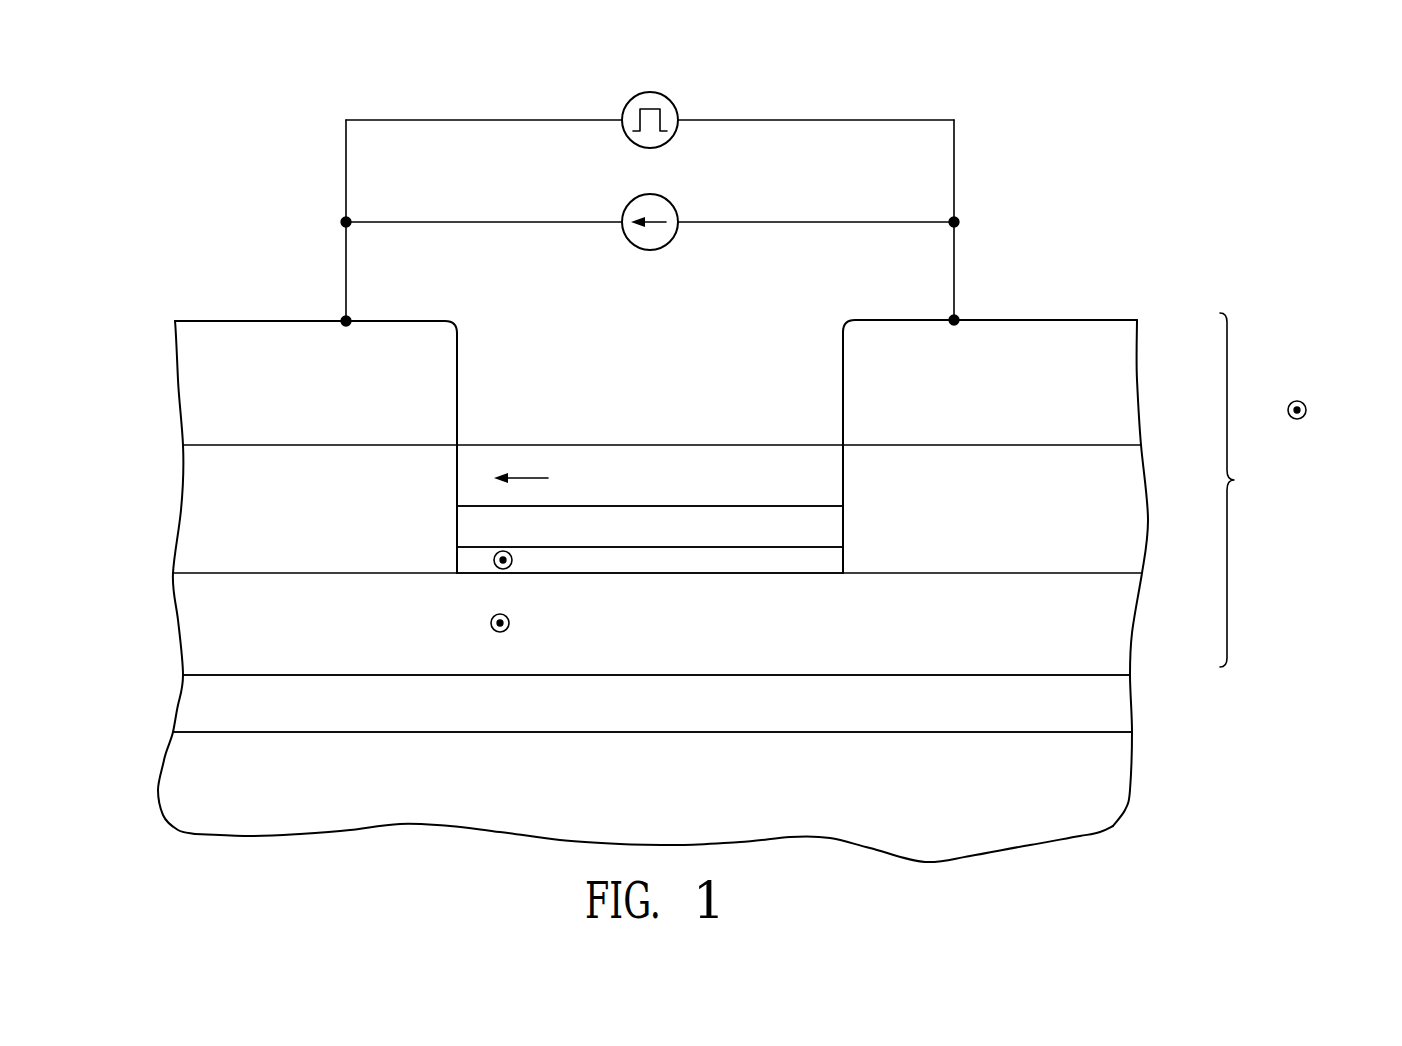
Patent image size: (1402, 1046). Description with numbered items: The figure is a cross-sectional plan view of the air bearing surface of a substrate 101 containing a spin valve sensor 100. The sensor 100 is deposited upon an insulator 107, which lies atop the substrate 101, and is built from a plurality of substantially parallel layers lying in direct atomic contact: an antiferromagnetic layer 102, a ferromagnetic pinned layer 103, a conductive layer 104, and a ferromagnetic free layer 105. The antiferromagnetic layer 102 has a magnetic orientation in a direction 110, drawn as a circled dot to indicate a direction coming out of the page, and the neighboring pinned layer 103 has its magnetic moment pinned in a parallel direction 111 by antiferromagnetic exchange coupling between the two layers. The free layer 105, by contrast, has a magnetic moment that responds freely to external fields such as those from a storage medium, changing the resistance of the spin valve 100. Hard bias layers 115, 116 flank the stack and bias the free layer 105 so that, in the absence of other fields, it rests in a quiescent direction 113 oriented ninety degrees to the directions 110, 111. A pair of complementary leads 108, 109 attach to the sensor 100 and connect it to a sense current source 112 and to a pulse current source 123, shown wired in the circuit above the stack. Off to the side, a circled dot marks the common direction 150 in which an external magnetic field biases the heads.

The spin valve sensor 100 is at (1250, 490).
The substrate 101 is at (677, 591).
The antiferromagnetic layer 102 is at (1112, 636).
The ferromagnetic pinned layer 103 is at (832, 560).
The conductive layer 104 is at (832, 527).
The ferromagnetic free layer 105 is at (832, 479).
The insulator 107 is at (1112, 712).
The lead 108 is at (196, 394).
The lead 109 is at (1115, 394).
The magnetic orientation direction of antiferromagnetic layer 110 is at (509, 622).
The pinned magnetic moment direction 111 is at (512, 559).
The sense current source 112 is at (673, 208).
The quiescent magnetization direction of free layer 113 is at (548, 478).
The hard bias layer 115 is at (196, 514).
The hard bias layer 116 is at (1115, 512).
The pulse current source 123 is at (673, 106).
The common direction 150 is at (1306, 405).